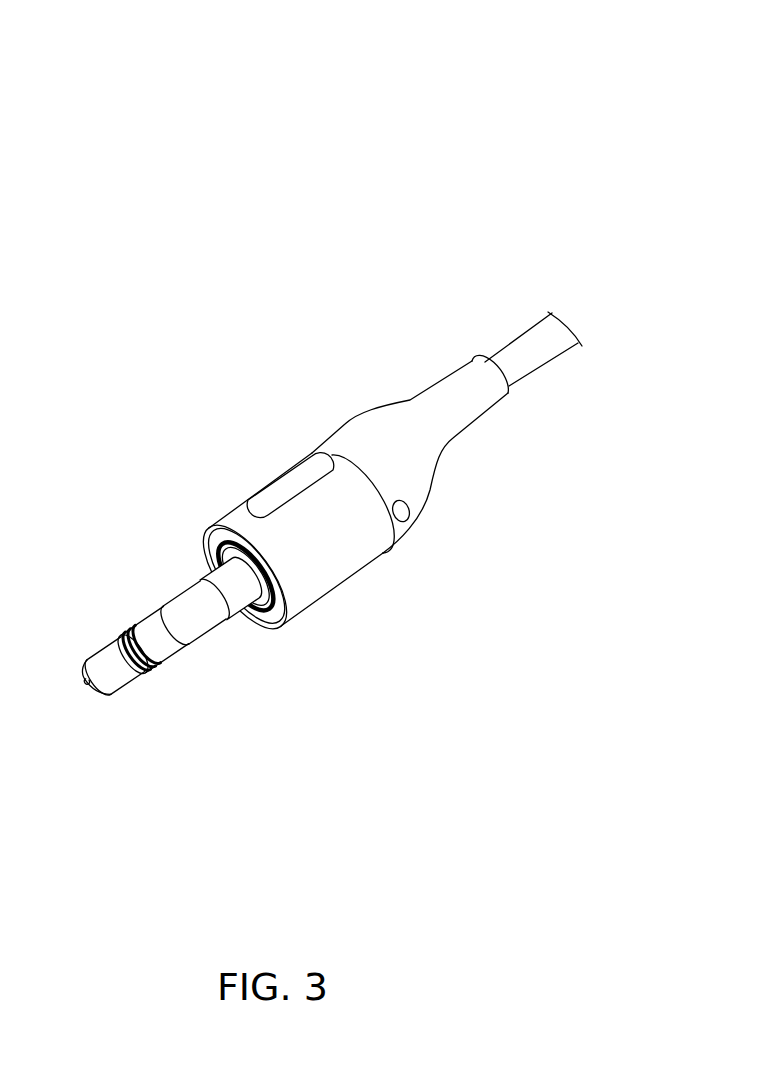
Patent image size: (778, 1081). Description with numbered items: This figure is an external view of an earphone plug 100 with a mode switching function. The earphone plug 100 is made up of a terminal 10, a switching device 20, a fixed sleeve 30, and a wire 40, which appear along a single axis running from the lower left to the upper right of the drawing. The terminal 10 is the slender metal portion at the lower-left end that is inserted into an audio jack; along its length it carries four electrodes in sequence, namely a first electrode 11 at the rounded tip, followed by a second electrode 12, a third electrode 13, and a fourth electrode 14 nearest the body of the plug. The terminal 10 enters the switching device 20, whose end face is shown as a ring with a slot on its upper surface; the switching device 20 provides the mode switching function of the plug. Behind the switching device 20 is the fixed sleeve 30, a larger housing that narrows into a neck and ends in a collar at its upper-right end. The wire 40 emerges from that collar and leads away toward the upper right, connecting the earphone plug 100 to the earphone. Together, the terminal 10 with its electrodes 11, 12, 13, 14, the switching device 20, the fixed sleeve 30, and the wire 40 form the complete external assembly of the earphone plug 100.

The earphone plug 100 is at (665, 45).
The terminal 10 is at (218, 678).
The first electrode 11 is at (123, 667).
The second electrode 12 is at (165, 630).
The third electrode 13 is at (198, 608).
The fourth electrode 14 is at (233, 592).
The switching device 20 is at (277, 472).
The fixed sleeve 30 is at (408, 398).
The wire 40 is at (528, 342).